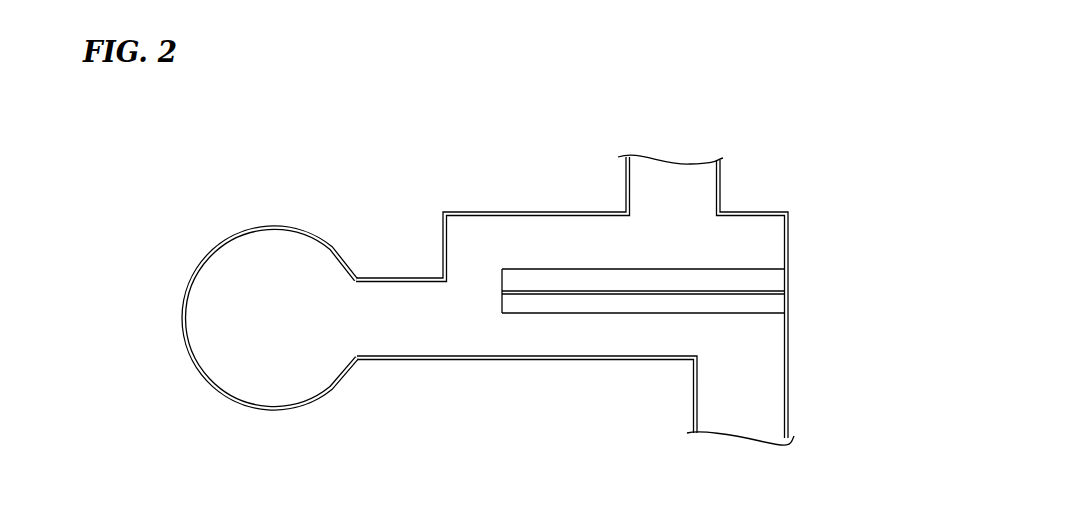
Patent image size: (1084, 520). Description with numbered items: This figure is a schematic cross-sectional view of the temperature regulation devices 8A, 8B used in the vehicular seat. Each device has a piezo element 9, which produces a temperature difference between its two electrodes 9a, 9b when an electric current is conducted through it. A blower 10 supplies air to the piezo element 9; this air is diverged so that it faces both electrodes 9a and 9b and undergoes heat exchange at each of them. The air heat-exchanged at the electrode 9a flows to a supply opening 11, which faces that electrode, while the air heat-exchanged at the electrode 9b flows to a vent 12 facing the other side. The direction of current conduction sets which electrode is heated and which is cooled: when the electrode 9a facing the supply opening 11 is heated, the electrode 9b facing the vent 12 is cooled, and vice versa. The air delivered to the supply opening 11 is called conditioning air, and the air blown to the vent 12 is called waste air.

The temperature regulation device 8A is at (476, 239).
The temperature regulation device 8B is at (476, 239).
The piezo element 9 is at (685, 267).
The electrode 9a is at (773, 282).
The electrode 9b is at (773, 303).
The blower 10 is at (203, 258).
The supply opening 11 is at (650, 167).
The vent 12 is at (709, 394).